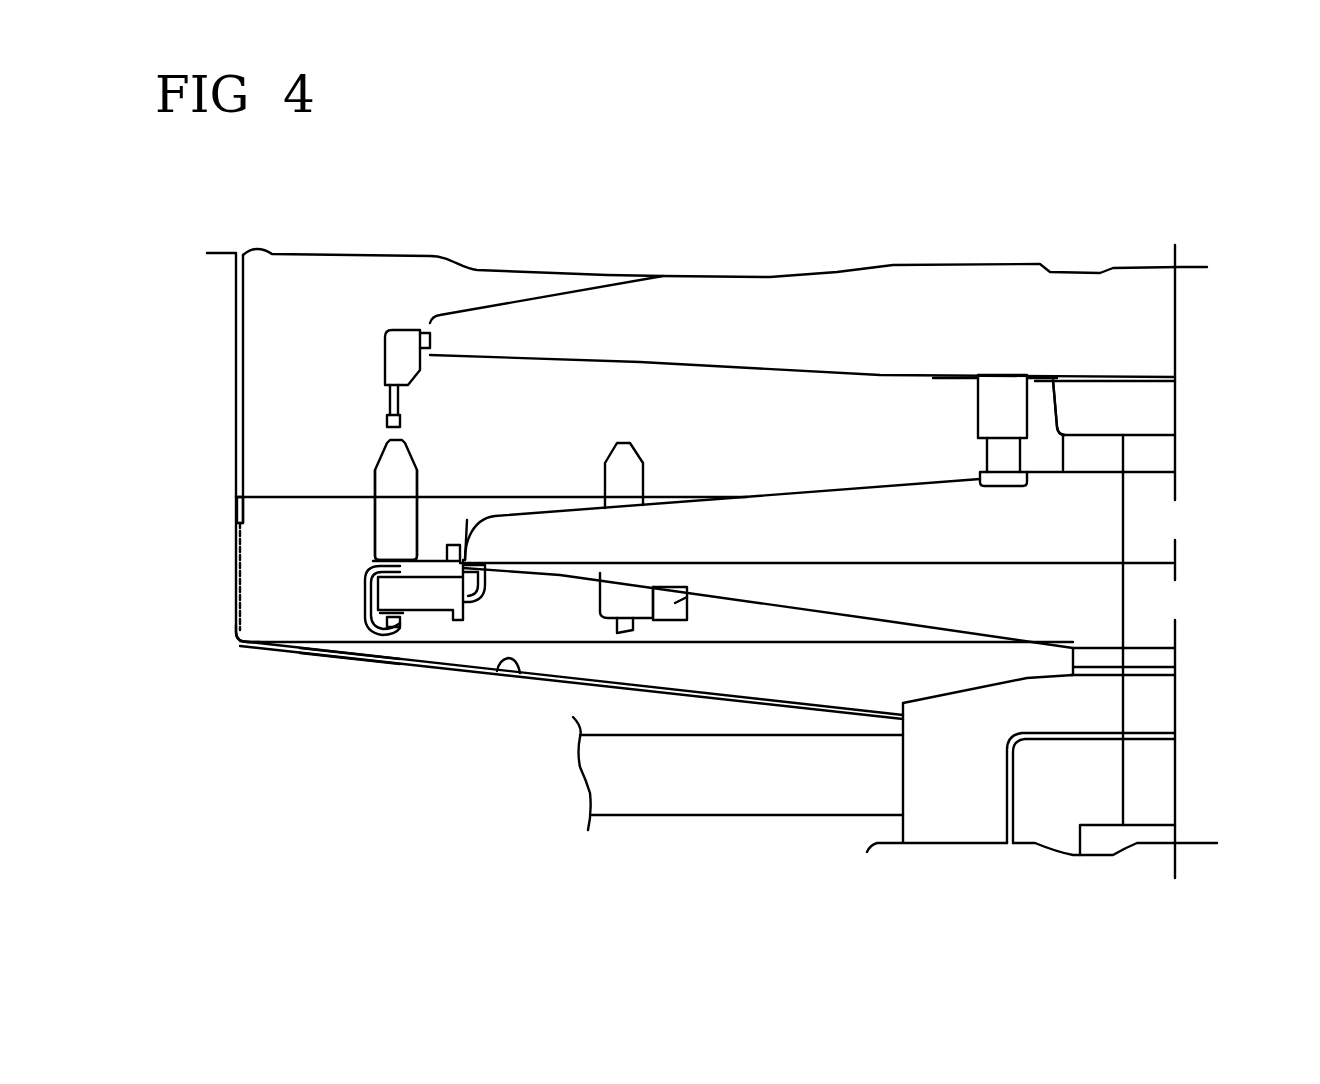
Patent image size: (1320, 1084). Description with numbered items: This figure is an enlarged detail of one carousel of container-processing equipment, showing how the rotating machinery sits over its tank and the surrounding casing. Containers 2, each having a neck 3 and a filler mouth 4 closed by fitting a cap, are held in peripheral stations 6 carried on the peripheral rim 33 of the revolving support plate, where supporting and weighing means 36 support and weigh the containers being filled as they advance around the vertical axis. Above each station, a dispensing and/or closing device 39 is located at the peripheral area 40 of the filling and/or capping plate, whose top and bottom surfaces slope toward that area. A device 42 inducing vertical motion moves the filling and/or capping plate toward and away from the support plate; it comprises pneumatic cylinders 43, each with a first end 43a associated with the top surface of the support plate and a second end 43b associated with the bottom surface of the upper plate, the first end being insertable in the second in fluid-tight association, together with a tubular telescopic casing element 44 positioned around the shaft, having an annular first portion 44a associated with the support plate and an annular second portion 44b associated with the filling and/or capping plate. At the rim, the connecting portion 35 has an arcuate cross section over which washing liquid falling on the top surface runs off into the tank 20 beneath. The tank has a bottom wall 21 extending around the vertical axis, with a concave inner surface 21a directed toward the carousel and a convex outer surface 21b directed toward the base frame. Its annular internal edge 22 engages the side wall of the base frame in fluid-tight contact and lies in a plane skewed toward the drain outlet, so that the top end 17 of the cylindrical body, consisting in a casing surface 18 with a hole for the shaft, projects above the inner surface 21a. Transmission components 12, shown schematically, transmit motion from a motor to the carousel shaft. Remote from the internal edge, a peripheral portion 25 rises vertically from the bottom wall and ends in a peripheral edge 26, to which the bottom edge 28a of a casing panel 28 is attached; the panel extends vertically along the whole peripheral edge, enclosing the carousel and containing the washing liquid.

The container 2 is at (366, 476).
The neck 3 is at (388, 443).
The filler mouth 4 is at (400, 443).
The peripheral station 6 is at (427, 538).
The transmission components 12 is at (723, 792).
The top end 17 is at (1036, 657).
The casing surface 18 is at (983, 688).
The tank 20 is at (288, 666).
The bottom wall 21 is at (315, 626).
The concave inner surface 21a is at (497, 673).
The convex outer surface 21b is at (347, 658).
The internal edge 22 is at (903, 722).
The peripheral portion 25 is at (233, 643).
The peripheral edge 26 is at (233, 533).
The casing panel 28 is at (226, 348).
The bottom edge 28a is at (233, 480).
The peripheral rim 33 is at (495, 511).
The connecting portion 35 is at (467, 520).
The supporting and weighing means 36 is at (421, 636).
The dispensing and/or closing devices 39 is at (392, 340).
The peripheral area 40 is at (427, 320).
The device inducing vertical motion 42 is at (885, 390).
The pneumatic cylinders 43 is at (960, 417).
The first end 43a is at (993, 457).
The second end 43b is at (977, 403).
The telescopic casing element 44 is at (1042, 390).
The first portion 44a is at (1063, 457).
The second portion 44b is at (1058, 425).